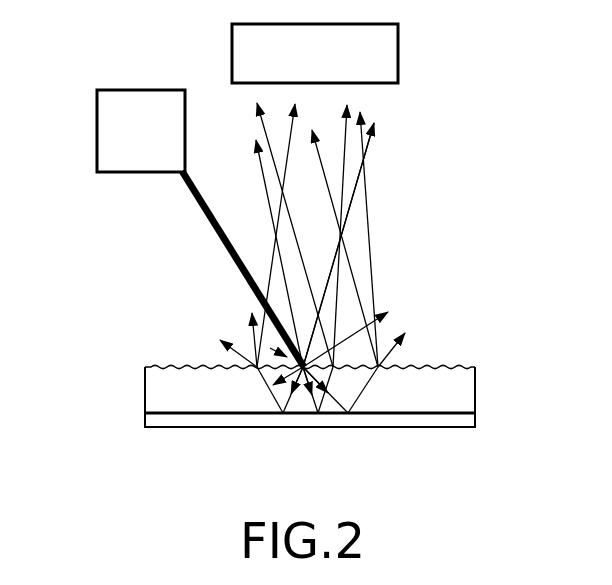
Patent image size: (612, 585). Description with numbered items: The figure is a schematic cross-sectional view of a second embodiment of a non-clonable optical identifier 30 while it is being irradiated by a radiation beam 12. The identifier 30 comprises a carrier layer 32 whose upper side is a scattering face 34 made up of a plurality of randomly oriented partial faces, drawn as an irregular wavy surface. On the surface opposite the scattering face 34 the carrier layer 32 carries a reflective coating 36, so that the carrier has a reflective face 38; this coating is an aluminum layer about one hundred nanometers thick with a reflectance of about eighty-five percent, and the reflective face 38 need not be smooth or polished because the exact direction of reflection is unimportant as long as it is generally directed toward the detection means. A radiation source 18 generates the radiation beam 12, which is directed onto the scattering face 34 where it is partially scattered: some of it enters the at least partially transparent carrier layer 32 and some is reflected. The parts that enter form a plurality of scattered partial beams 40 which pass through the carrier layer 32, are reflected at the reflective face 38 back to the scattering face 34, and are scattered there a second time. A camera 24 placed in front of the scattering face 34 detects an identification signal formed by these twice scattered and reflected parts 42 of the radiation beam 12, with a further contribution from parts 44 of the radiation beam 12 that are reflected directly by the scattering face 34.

The radiation beam 12 is at (196, 215).
The radiation source 18 is at (97, 131).
The camera 24 is at (399, 52).
The non-clonable optical identifier 30 is at (497, 337).
The carrier layer 32 is at (145, 380).
The scattering face 34 is at (163, 367).
The reflective coating 36 is at (172, 427).
The reflective face 38 is at (467, 413).
The scattered partial beams 40 is at (336, 413).
The twice scattered and reflected parts 42 is at (370, 163).
The reflected parts of the radiation beam 44 is at (327, 262).